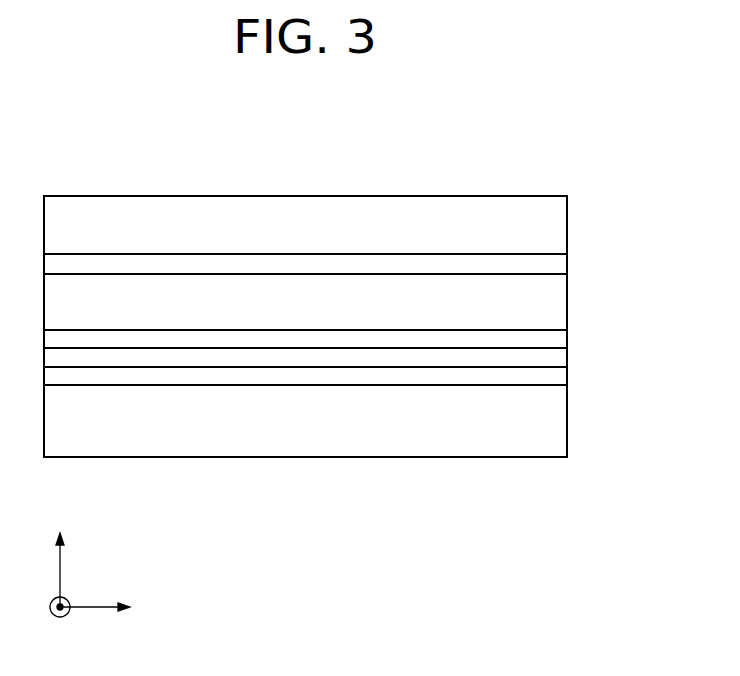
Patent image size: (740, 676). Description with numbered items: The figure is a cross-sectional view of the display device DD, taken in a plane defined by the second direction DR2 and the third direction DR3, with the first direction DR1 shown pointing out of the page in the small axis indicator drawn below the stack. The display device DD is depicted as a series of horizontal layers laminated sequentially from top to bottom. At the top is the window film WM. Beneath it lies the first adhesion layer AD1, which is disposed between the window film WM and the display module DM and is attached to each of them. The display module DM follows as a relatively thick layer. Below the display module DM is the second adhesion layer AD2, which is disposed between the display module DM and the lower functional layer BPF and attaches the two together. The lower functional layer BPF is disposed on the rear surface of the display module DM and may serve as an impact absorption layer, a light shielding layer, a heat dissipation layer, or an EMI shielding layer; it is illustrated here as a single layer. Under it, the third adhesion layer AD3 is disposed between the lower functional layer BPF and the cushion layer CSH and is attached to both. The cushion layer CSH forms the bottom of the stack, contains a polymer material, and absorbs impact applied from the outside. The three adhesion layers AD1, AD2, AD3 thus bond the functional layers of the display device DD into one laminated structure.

The display device DD is at (523, 152).
The window film WM is at (558, 227).
The first adhesion layer AD1 is at (558, 263).
The display module DM is at (558, 303).
The second adhesion layer AD2 is at (558, 338).
The lower functional layer BPF is at (558, 359).
The third adhesion layer AD3 is at (558, 375).
The cushion layer CSH is at (558, 422).
The first direction DR1 is at (61, 621).
The second direction DR2 is at (115, 608).
The third direction DR3 is at (61, 556).